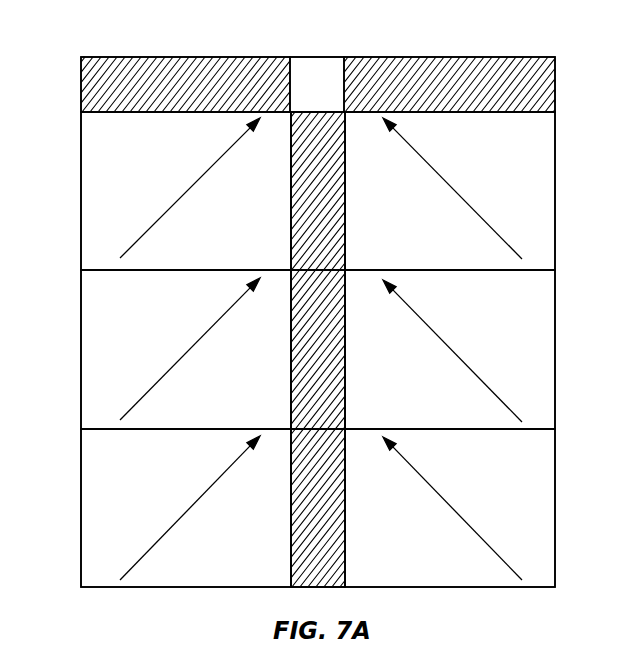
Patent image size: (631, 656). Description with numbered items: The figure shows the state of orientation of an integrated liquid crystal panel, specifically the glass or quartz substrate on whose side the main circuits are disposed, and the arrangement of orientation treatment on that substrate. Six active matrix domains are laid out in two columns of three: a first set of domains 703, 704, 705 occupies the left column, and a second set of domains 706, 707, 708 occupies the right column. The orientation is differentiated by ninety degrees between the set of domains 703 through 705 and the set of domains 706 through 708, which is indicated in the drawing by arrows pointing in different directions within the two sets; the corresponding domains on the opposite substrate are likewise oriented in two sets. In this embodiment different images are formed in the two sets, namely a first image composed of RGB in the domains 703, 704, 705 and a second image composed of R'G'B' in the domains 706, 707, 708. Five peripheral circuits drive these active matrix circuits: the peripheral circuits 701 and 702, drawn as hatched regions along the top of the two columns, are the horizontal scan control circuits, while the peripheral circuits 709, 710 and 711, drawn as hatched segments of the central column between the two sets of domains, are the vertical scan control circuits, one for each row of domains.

The peripheral circuit 701 is at (115, 60).
The peripheral circuit 702 is at (527, 60).
The domain 703 is at (93, 157).
The domain 704 is at (93, 314).
The domain 705 is at (93, 472).
The domain 706 is at (538, 157).
The domain 707 is at (538, 314).
The domain 708 is at (538, 472).
The peripheral circuit 709 is at (335, 218).
The peripheral circuit 710 is at (335, 377).
The peripheral circuit 711 is at (335, 535).